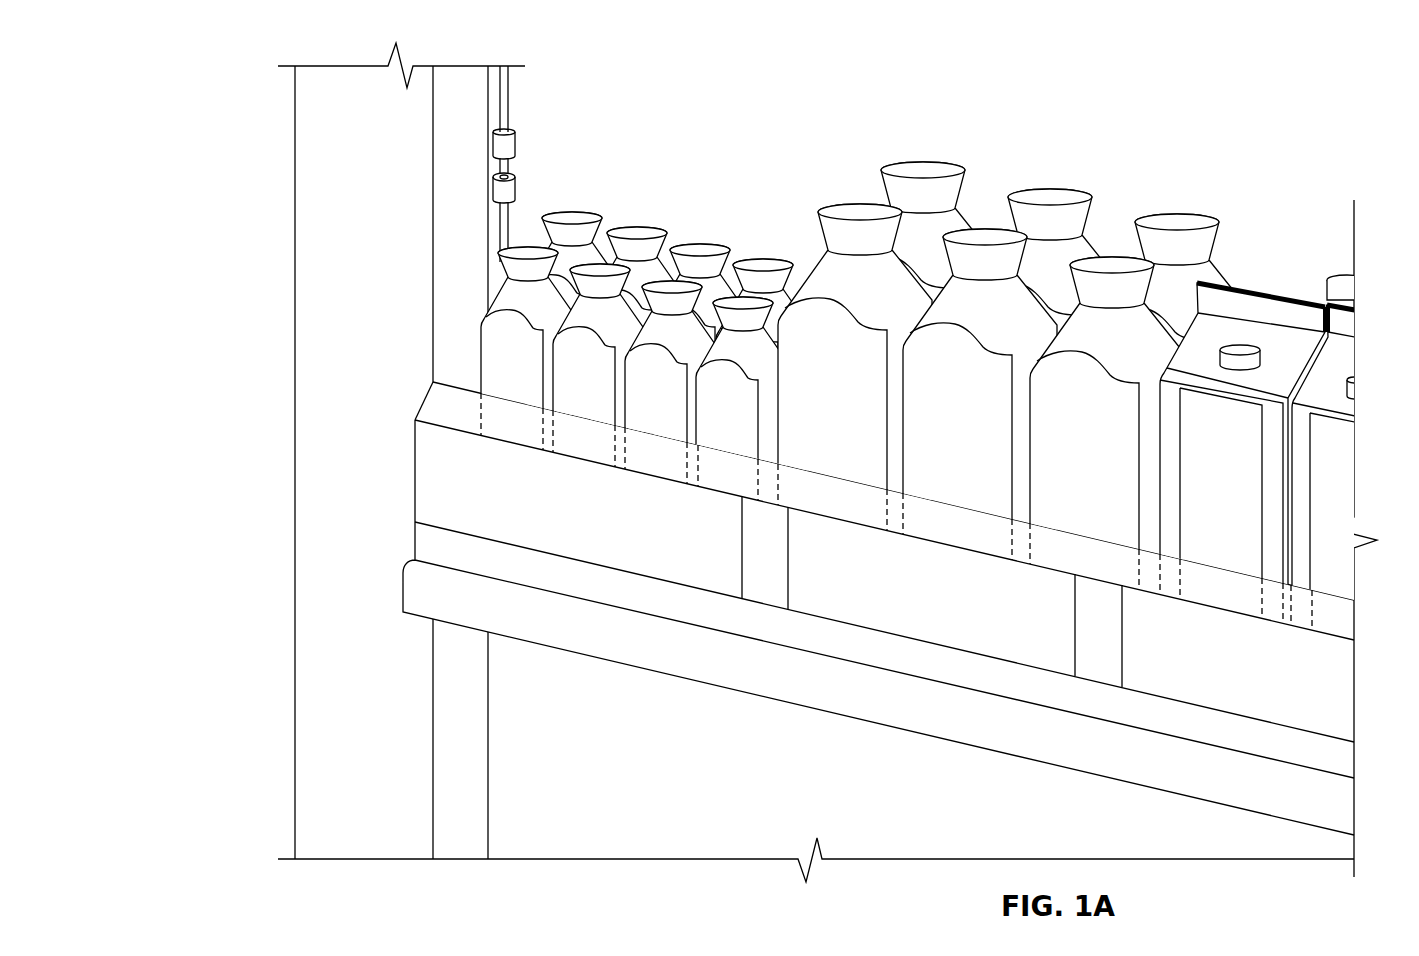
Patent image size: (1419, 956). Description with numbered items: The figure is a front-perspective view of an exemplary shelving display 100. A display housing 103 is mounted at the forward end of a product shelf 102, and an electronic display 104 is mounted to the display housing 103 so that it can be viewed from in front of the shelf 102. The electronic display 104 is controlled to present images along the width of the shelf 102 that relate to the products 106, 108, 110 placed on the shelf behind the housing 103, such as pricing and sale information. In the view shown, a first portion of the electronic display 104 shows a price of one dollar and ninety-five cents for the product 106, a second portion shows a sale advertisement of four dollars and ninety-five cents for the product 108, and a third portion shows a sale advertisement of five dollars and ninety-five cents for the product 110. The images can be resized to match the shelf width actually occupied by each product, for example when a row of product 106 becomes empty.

The shelving display 100 is at (257, 68).
The product shelf 102 is at (672, 656).
The display housing 103 is at (428, 398).
The electronic display 104 is at (442, 497).
The product 106 is at (664, 188).
The product 108 is at (1067, 150).
The product 110 is at (1321, 182).